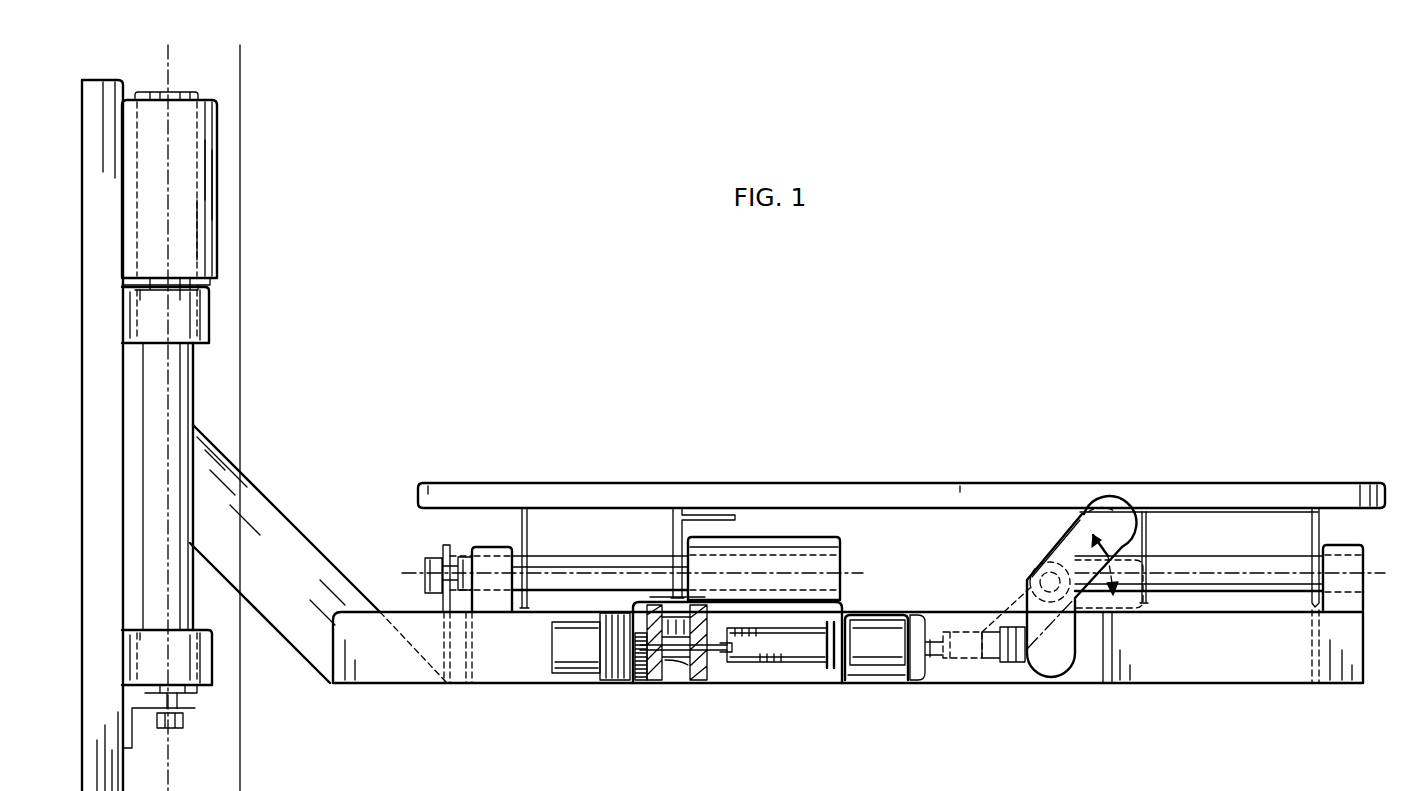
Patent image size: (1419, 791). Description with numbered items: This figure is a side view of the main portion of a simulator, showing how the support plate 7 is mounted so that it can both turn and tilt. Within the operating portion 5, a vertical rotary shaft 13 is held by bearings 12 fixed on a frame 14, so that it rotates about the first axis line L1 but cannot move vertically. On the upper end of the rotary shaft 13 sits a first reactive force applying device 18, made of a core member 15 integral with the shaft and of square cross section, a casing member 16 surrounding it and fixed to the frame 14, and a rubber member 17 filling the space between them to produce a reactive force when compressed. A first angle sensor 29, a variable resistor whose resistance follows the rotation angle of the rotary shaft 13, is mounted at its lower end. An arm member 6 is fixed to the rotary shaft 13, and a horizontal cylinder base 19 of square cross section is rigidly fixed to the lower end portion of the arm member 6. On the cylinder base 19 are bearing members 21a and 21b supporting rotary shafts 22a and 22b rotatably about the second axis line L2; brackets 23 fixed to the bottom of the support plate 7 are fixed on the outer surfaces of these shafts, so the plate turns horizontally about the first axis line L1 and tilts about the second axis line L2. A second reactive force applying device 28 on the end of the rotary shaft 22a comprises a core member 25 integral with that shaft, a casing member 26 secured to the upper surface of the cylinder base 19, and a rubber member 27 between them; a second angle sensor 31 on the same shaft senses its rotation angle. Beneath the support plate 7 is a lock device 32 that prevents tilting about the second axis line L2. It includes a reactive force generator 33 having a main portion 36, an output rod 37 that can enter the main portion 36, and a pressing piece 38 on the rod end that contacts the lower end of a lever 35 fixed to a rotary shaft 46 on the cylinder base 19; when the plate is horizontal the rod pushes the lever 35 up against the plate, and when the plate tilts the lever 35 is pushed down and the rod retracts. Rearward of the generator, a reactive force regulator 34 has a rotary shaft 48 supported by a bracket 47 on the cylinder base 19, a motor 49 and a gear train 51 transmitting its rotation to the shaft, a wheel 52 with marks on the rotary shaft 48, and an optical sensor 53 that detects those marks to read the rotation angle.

The frame 14 is at (103, 82).
The first axis line L1 is at (170, 71).
The operating portion 5 is at (240, 82).
The first reactive force applying device 18 is at (219, 191).
The casing member 16 is at (208, 155).
The rubber member 17 is at (205, 192).
The core member 15 is at (232, 230).
The bearings 12 is at (210, 325).
The rotary shaft 13 is at (190, 397).
The first angle sensor 29 is at (178, 733).
The arm member 6 is at (278, 525).
The cylinder base 19 is at (1282, 658).
The support plate 7 is at (985, 483).
The brackets 23 is at (527, 537).
The second axis line L2 is at (408, 568).
The second angle sensor 31 is at (430, 580).
The bearing member 21a is at (492, 547).
The rotary shaft 22a is at (552, 582).
The second reactive force applying device 28 is at (777, 492).
The core member 25 is at (764, 509).
The casing member 26 is at (817, 543).
The rubber member 27 is at (780, 547).
The reactive force regulator 34 is at (697, 646).
The motor 49 is at (582, 662).
The gear train 51 is at (640, 685).
The wheel 52 is at (680, 662).
The rotary shaft 48 is at (712, 652).
The optical sensor 53 is at (652, 597).
The bracket 47 is at (765, 643).
The reactive force generator 33 is at (908, 677).
The main portion 36 is at (828, 663).
The output rod 37 is at (930, 660).
The pressing piece 38 is at (986, 658).
The lever 35 is at (1060, 589).
The rotary shaft 46 is at (1030, 588).
The lock device 32 is at (1003, 695).
The rotary shaft 22b is at (1193, 583).
The bearing member 21b is at (1340, 545).